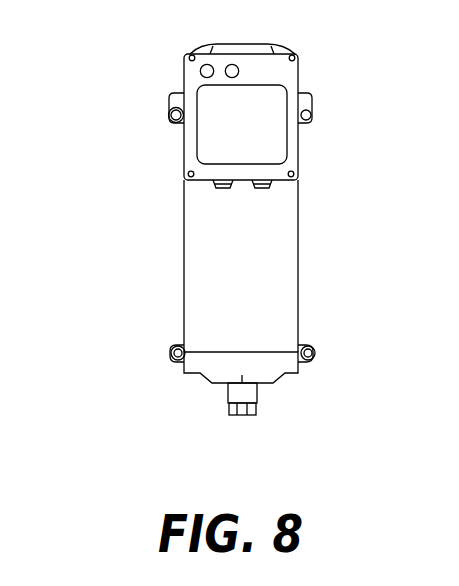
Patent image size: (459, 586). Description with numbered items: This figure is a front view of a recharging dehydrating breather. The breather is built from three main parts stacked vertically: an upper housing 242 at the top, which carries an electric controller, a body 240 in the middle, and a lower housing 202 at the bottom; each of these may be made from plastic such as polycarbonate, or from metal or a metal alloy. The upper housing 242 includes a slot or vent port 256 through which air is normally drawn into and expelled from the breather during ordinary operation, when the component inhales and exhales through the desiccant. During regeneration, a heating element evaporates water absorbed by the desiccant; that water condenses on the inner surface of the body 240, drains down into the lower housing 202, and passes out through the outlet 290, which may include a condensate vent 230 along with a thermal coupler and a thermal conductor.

The upper housing 242 is at (185, 58).
The vent port 256 is at (178, 97).
The body 240 is at (210, 252).
The lower housing 202 is at (190, 362).
The condensate vent 230 is at (228, 410).
The outlet 290 is at (267, 413).